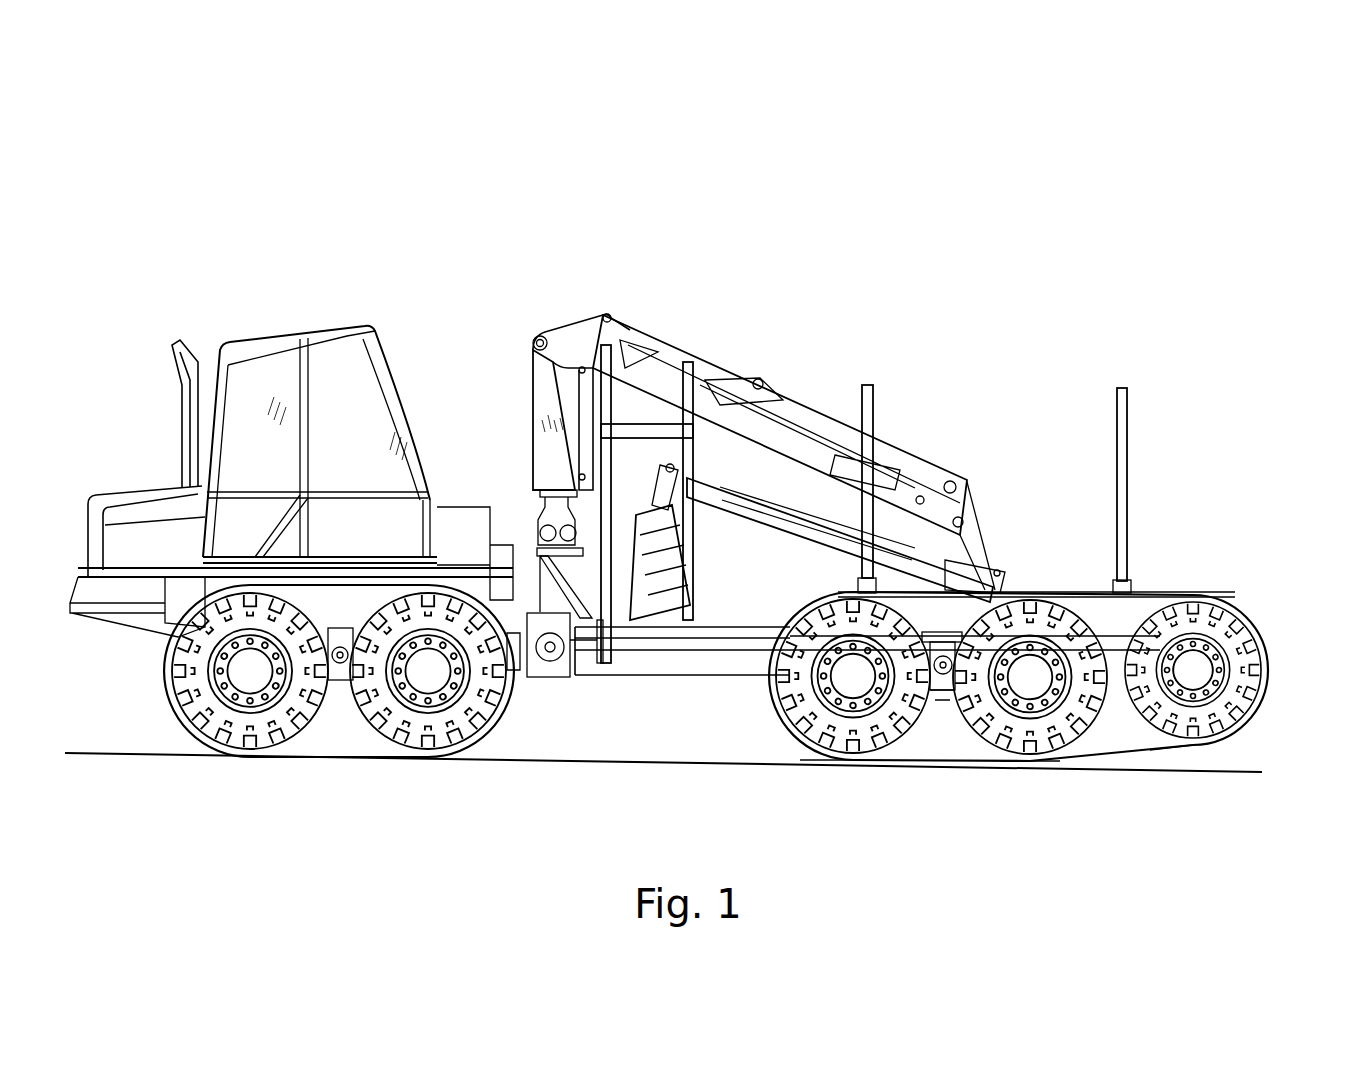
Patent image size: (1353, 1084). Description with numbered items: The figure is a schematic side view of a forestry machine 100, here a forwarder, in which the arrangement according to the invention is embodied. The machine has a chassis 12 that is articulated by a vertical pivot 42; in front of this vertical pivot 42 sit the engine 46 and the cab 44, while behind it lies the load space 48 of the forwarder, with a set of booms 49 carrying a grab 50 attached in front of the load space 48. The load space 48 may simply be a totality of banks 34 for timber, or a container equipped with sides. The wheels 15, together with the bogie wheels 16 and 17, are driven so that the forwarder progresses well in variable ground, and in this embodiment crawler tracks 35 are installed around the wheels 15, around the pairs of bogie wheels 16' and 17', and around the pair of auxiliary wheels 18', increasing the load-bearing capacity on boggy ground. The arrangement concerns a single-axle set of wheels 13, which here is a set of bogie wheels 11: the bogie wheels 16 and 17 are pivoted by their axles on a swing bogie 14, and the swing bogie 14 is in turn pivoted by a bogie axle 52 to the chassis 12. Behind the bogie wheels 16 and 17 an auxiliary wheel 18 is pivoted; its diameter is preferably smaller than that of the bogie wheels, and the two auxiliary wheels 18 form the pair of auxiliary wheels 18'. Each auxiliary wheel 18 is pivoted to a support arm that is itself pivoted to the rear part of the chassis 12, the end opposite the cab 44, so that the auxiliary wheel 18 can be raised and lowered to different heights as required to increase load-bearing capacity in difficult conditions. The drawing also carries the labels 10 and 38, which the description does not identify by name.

The forwarder 10 is at (1027, 303).
The set of bogie wheels 11 is at (1040, 568).
The chassis 12 is at (944, 620).
The single-axle set of wheels 13 is at (972, 770).
The swing bogie 14 is at (950, 742).
The wheels 15 is at (238, 722).
The bogie wheel 16 is at (846, 722).
The pair of bogie wheels 16' is at (775, 791).
The bogie wheel 17 is at (1030, 731).
The pair of bogie wheels 17' is at (1036, 806).
The auxiliary wheel 18 is at (1193, 690).
The pair of auxiliary wheels 18' is at (1232, 807).
The banks 34 is at (678, 360).
The crawler tracks 35 is at (332, 752).
The rear wheel hub 38 is at (1195, 668).
The vertical pivot 42 is at (535, 586).
The cab 44 is at (363, 393).
The engine 46 is at (133, 530).
The load space 48 is at (1165, 276).
The set of booms 49 is at (708, 378).
The grab 50 is at (680, 590).
The bogie axle 52 is at (948, 735).
The forestry machine 100 is at (634, 220).